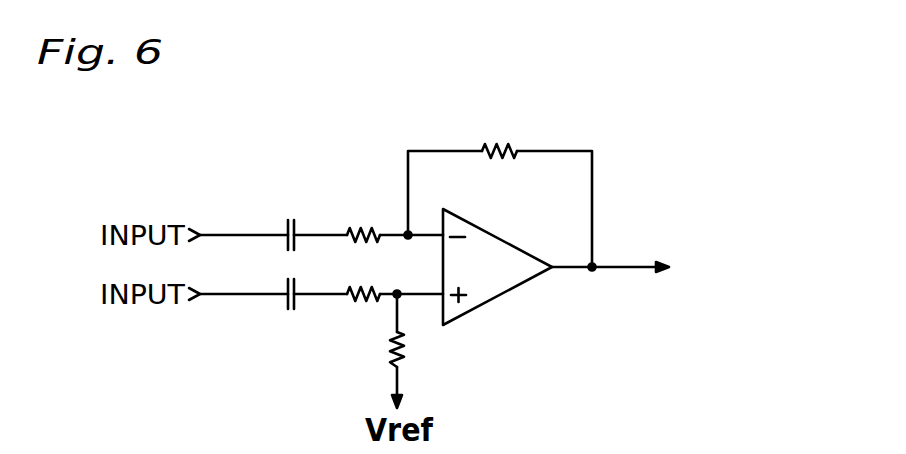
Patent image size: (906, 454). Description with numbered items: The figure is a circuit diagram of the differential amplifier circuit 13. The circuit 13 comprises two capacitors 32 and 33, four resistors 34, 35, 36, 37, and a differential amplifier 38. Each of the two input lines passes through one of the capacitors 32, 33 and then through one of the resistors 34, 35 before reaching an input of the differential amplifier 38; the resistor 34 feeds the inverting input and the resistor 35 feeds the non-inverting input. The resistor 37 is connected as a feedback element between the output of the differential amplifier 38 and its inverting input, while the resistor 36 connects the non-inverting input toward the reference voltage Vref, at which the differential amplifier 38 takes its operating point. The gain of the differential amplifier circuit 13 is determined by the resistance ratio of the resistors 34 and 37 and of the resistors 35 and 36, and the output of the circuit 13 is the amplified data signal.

The differential amplifier circuit 13 is at (613, 132).
The capacitor 32 is at (288, 221).
The capacitor 33 is at (288, 309).
The resistor 34 is at (365, 226).
The resistor 35 is at (368, 303).
The resistor 36 is at (405, 340).
The resistor 37 is at (497, 142).
The differential amplifier 38 is at (507, 293).